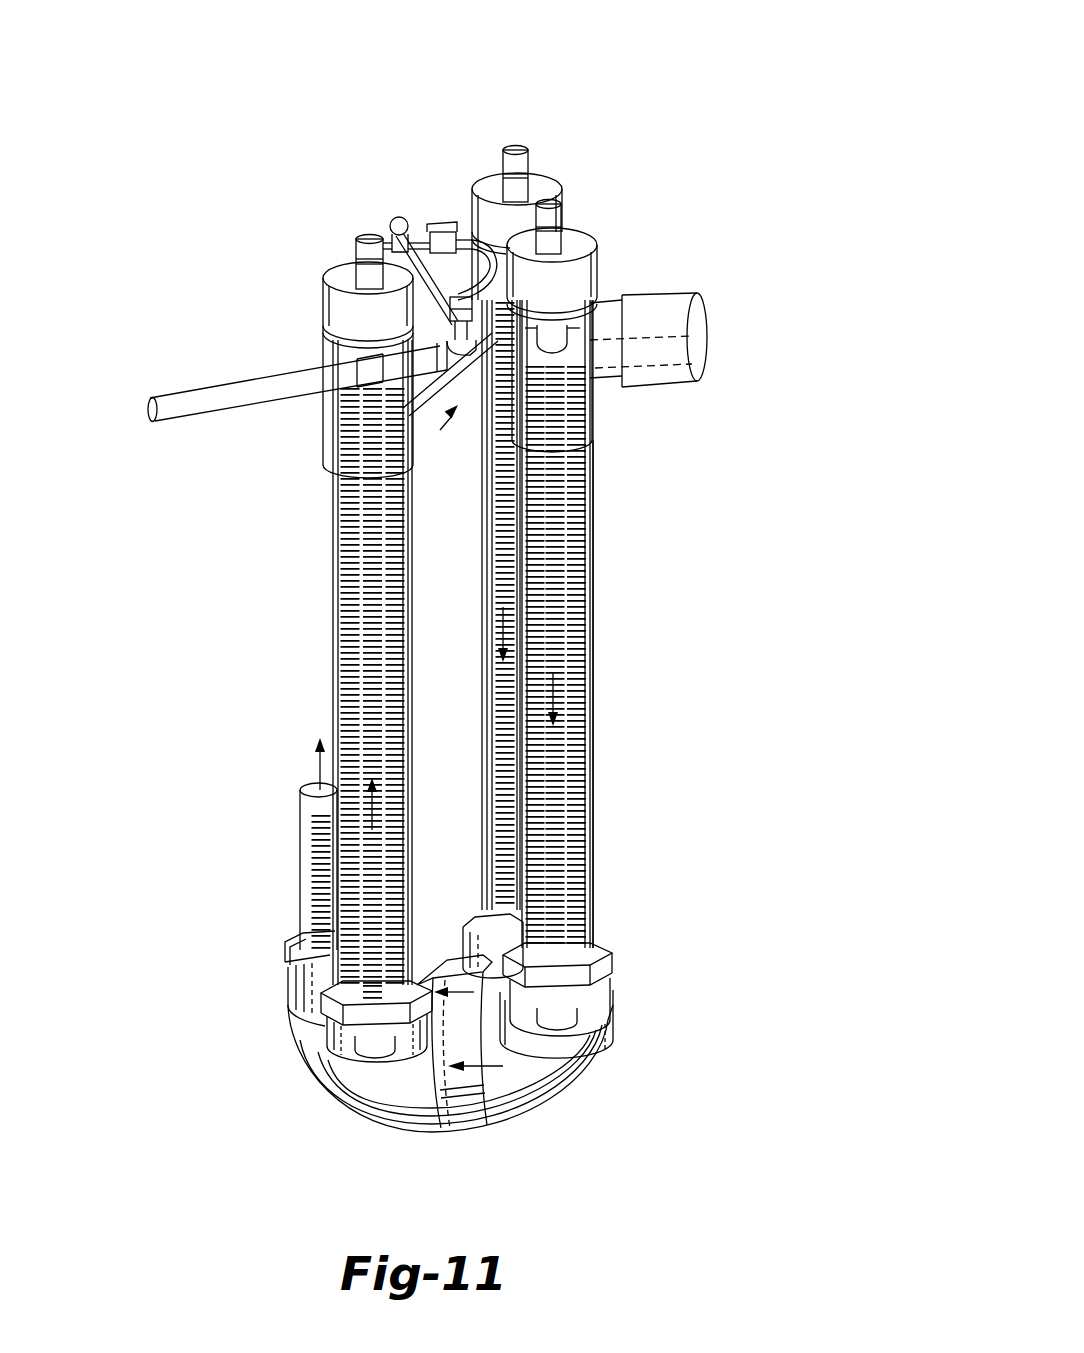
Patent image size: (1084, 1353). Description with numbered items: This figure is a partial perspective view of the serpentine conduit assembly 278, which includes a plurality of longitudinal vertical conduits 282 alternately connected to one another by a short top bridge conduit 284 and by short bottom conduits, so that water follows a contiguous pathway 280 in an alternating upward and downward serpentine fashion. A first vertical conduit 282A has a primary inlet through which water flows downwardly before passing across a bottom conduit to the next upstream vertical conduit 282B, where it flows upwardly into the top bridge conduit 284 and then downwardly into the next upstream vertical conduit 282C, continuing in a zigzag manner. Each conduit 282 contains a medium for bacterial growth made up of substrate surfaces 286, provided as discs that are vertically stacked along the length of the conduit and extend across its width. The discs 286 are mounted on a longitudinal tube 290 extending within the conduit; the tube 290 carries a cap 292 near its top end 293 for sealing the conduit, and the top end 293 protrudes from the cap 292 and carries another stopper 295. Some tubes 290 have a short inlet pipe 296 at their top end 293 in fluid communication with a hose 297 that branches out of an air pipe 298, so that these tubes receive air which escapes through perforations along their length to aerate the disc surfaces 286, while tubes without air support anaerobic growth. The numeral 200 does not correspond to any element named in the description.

The serpentine conduit assembly 278 is at (534, 104).
The clamp band 200 is at (440, 1008).
The pathway 280 is at (440, 430).
The longitudinal vertical conduits 282 is at (602, 560).
The first vertical conduit 282A is at (505, 622).
The vertical conduit 282B is at (326, 672).
The vertical conduit 282C is at (478, 545).
The top bridge conduit 284 is at (420, 240).
The substrate surfaces 286 is at (376, 1125).
The longitudinal tube 290 is at (330, 313).
The cap 292 is at (620, 152).
The top end 293 is at (358, 277).
The stopper 295 is at (360, 253).
The short inlet pipe 296 is at (397, 220).
The hose 297 is at (430, 225).
The air pipe 298 is at (663, 298).